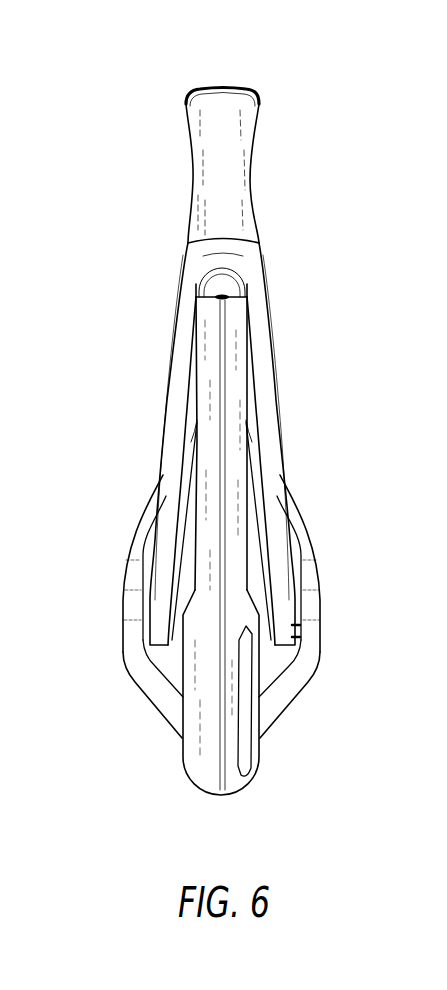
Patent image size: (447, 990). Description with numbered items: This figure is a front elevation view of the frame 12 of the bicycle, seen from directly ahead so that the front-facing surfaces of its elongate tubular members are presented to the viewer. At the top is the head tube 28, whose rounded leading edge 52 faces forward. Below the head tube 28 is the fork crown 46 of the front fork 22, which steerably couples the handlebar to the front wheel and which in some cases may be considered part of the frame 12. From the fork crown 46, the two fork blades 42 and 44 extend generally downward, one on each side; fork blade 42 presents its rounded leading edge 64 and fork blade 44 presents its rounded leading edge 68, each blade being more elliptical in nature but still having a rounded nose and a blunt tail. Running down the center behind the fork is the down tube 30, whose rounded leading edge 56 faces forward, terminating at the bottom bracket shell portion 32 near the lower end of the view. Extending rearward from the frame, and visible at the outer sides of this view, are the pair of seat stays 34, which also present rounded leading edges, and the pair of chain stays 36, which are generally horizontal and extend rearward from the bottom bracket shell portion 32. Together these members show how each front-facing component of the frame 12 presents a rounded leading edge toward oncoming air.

The frame 12 is at (106, 103).
The head tube 28 is at (234, 178).
The leading edge 52 is at (206, 149).
The fork crown 46 is at (238, 257).
The leading edge 64 is at (258, 320).
The front fork 22 is at (268, 367).
The leading edge 68 is at (182, 345).
The down tube 30 is at (220, 457).
The leading edge 56 is at (220, 520).
The fork blade 44 is at (169, 486).
The fork blade 42 is at (283, 462).
The seat stays 34 is at (152, 503).
The chain stays 36 is at (141, 673).
The bottom bracket shell portion 32 is at (205, 712).